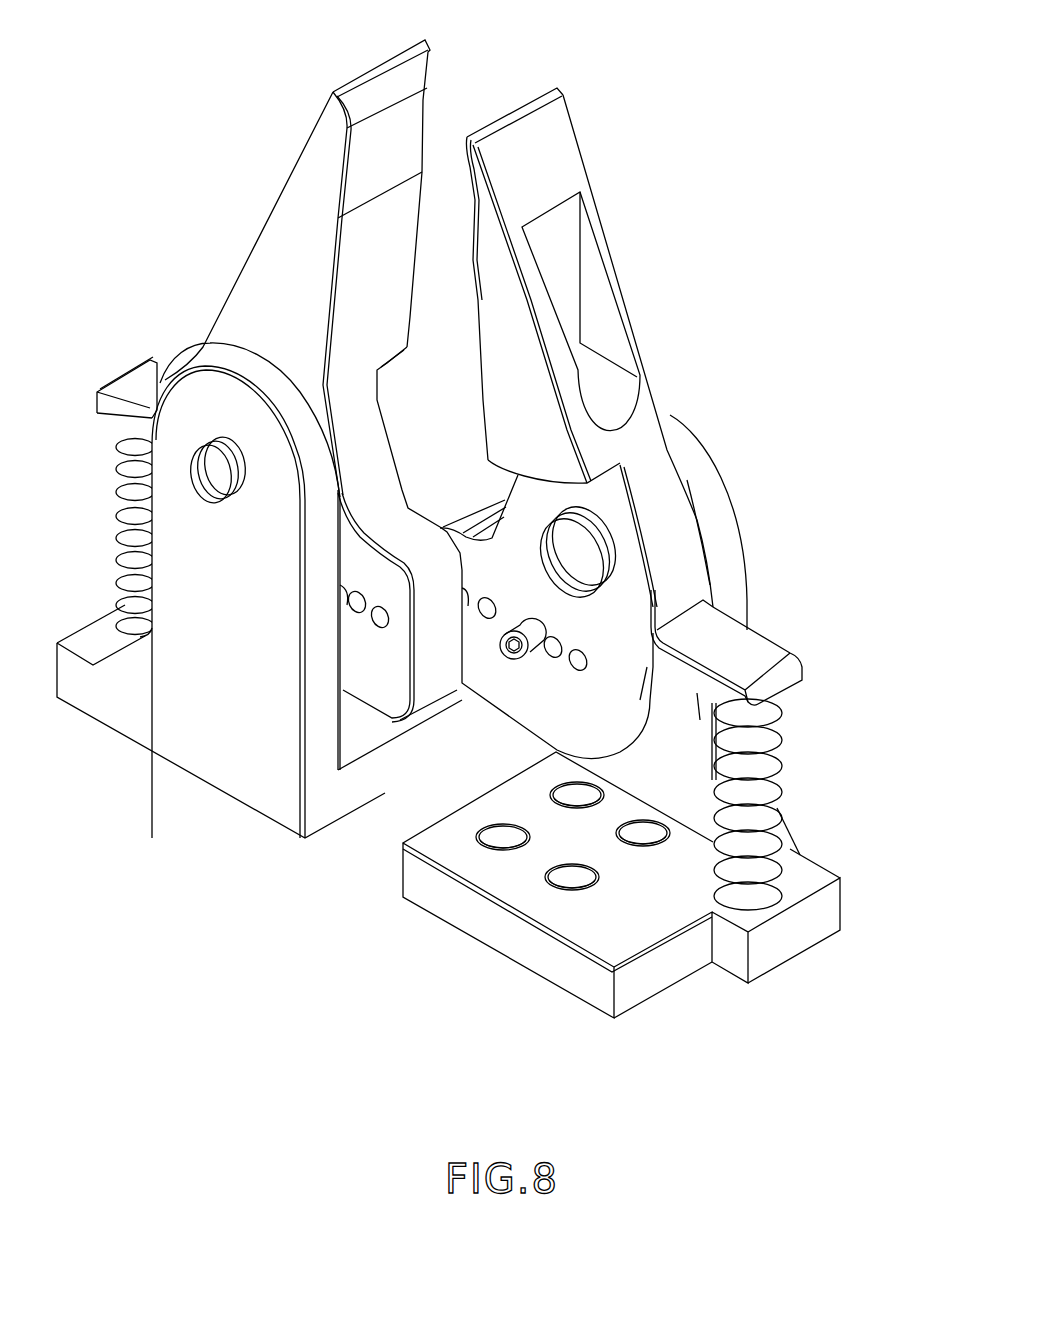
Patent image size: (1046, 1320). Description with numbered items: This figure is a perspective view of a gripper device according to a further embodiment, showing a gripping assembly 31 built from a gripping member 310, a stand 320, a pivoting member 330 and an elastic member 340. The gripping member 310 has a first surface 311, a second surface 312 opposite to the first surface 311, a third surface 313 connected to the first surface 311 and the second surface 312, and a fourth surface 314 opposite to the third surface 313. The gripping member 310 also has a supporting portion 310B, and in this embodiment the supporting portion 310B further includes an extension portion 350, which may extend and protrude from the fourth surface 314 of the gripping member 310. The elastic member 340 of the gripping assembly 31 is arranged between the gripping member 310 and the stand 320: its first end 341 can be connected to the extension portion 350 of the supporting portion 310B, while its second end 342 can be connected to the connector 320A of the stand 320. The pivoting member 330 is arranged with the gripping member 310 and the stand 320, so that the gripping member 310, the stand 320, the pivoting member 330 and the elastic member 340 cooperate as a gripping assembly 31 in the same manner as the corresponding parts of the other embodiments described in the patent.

The gripping assembly 31 is at (467, 498).
The gripping member 310 is at (637, 343).
The first surface 311 is at (257, 293).
The second surface 312 is at (475, 162).
The third surface 313 is at (397, 313).
The fourth surface 314 is at (647, 465).
The pivoting member 330 is at (207, 476).
The extension portion 350 is at (753, 647).
The elastic member 340 is at (832, 804).
The first end 341 is at (773, 717).
The second end 342 is at (877, 707).
The stand 320 is at (180, 747).
The connector 320A is at (533, 953).
The supporting portion 310B is at (533, 693).